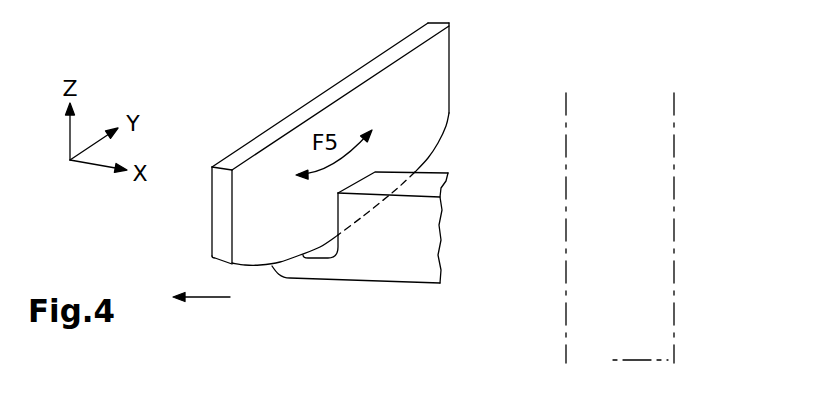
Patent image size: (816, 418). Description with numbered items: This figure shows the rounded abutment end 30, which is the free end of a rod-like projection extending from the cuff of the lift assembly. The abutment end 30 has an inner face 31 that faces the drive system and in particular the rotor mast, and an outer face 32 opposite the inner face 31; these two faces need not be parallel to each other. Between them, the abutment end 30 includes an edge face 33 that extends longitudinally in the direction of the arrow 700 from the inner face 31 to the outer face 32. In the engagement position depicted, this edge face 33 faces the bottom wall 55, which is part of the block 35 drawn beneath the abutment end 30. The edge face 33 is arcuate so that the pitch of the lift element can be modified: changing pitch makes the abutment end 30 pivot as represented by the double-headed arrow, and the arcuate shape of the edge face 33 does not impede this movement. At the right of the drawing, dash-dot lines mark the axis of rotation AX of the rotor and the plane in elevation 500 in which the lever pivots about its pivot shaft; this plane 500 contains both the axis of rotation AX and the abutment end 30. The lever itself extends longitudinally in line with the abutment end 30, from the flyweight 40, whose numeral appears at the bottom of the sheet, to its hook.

The abutment end 30 is at (332, 169).
The inner face 31 is at (433, 87).
The outer face 32 is at (212, 220).
The edge face 33 is at (233, 264).
The support block / base 35 is at (382, 283).
The bottom wall 55 is at (312, 258).
The arrow 700 is at (217, 297).
The plane in elevation 500 is at (674, 352).
The axis of rotation AX is at (566, 352).
The flyweight 40 is at (178, 412).